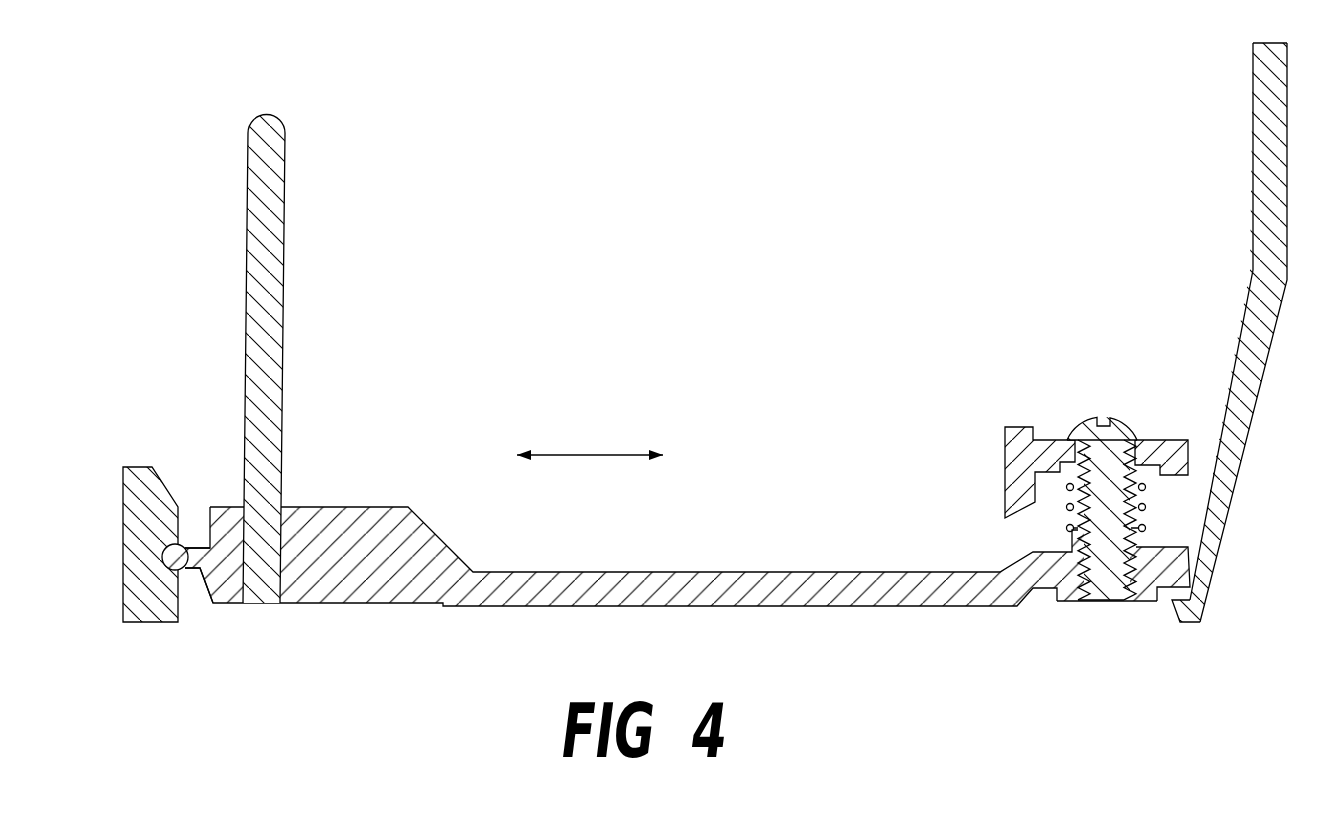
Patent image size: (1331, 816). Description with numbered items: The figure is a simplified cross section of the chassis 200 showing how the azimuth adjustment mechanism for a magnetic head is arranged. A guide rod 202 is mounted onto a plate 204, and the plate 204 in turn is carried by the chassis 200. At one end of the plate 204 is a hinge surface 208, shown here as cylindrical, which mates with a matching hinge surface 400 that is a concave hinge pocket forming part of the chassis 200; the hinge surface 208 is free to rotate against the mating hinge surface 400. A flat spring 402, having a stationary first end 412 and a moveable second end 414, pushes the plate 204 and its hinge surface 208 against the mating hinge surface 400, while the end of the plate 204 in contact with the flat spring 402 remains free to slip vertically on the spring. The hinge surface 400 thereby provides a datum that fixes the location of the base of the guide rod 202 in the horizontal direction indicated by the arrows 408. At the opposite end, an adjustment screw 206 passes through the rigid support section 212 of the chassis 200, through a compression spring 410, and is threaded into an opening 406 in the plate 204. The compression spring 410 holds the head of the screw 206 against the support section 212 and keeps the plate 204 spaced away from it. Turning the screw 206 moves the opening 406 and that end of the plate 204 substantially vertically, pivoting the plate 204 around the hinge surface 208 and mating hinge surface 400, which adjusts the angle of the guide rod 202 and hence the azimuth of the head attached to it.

The chassis 200 is at (138, 466).
The guide rod 202 is at (268, 114).
The plate 204 is at (742, 572).
The adjustment screw 206 is at (1128, 420).
The hinge surface 208 is at (188, 573).
The rigid support section 212 is at (1030, 427).
The mating hinge surface 400 is at (160, 552).
The flat spring 402 is at (1233, 507).
The opening 406 is at (1090, 603).
The arrows 408 is at (607, 453).
The compression spring 410 is at (1067, 528).
The first end 412 is at (1268, 43).
The second end 414 is at (1192, 624).